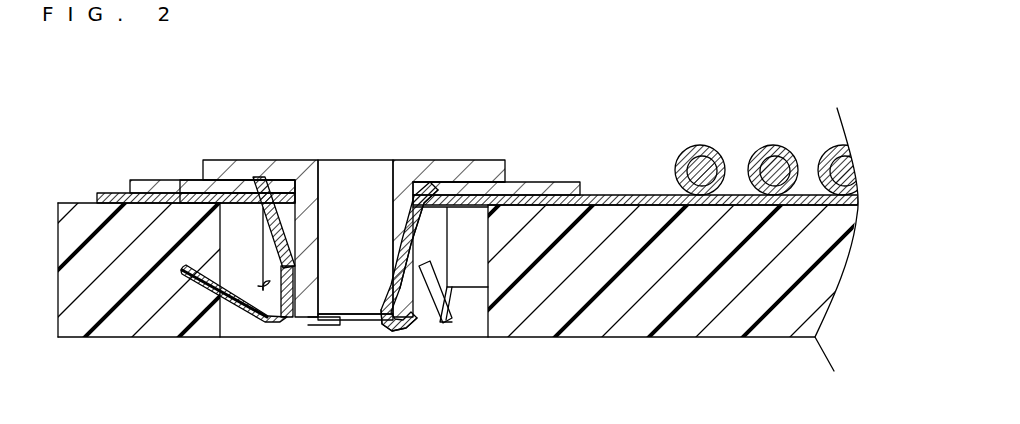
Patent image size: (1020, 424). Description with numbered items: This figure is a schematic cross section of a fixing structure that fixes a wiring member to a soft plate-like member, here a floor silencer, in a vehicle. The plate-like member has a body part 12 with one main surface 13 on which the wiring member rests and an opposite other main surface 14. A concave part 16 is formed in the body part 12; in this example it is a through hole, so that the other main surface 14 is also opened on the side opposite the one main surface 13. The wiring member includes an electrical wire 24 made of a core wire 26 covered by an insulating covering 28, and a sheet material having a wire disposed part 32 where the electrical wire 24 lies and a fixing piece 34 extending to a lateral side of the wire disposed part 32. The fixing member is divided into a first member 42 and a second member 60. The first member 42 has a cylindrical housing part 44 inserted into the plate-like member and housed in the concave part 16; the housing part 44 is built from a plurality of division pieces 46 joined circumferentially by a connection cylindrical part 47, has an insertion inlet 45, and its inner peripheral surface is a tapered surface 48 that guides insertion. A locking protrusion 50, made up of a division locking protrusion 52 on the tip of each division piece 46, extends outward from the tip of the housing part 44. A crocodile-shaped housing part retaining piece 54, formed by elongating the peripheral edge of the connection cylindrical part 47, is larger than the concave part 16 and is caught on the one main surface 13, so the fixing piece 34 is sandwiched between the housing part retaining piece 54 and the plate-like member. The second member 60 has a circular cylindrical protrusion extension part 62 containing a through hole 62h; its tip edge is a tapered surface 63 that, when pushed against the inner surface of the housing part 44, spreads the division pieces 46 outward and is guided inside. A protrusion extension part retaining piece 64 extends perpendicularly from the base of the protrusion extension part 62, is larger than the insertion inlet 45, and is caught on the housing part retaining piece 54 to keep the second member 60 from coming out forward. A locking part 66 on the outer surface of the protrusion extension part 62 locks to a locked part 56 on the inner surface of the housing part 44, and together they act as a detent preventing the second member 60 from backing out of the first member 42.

The body part 12 is at (73, 270).
The one main surface 13 is at (72, 203).
The other main surface 14 is at (68, 338).
The concave part 16 is at (220, 325).
The electrical wire 24 is at (770, 133).
The core wire 26 is at (706, 147).
The insulating covering 28 is at (697, 147).
The wire disposed part 32 is at (810, 195).
The fixing piece 34 is at (110, 200).
The first member 42 is at (536, 172).
The housing part 44 is at (237, 164).
The insertion inlet 45 is at (418, 250).
The division piece 46 is at (195, 192).
The connection cylindrical part 47 is at (480, 184).
The tapered surface 48 is at (268, 250).
The locking protrusion 50 is at (467, 295).
The division locking protrusion 52 is at (470, 305).
The housing part retaining piece 54 is at (147, 187).
The locked part 56 is at (380, 320).
The second member 60 is at (452, 157).
The protrusion extension part 62 is at (408, 190).
The through hole 62h is at (322, 210).
The tapered surface 63 is at (284, 318).
The protrusion extension part retaining piece 64 is at (248, 167).
The locking part 66 is at (415, 326).